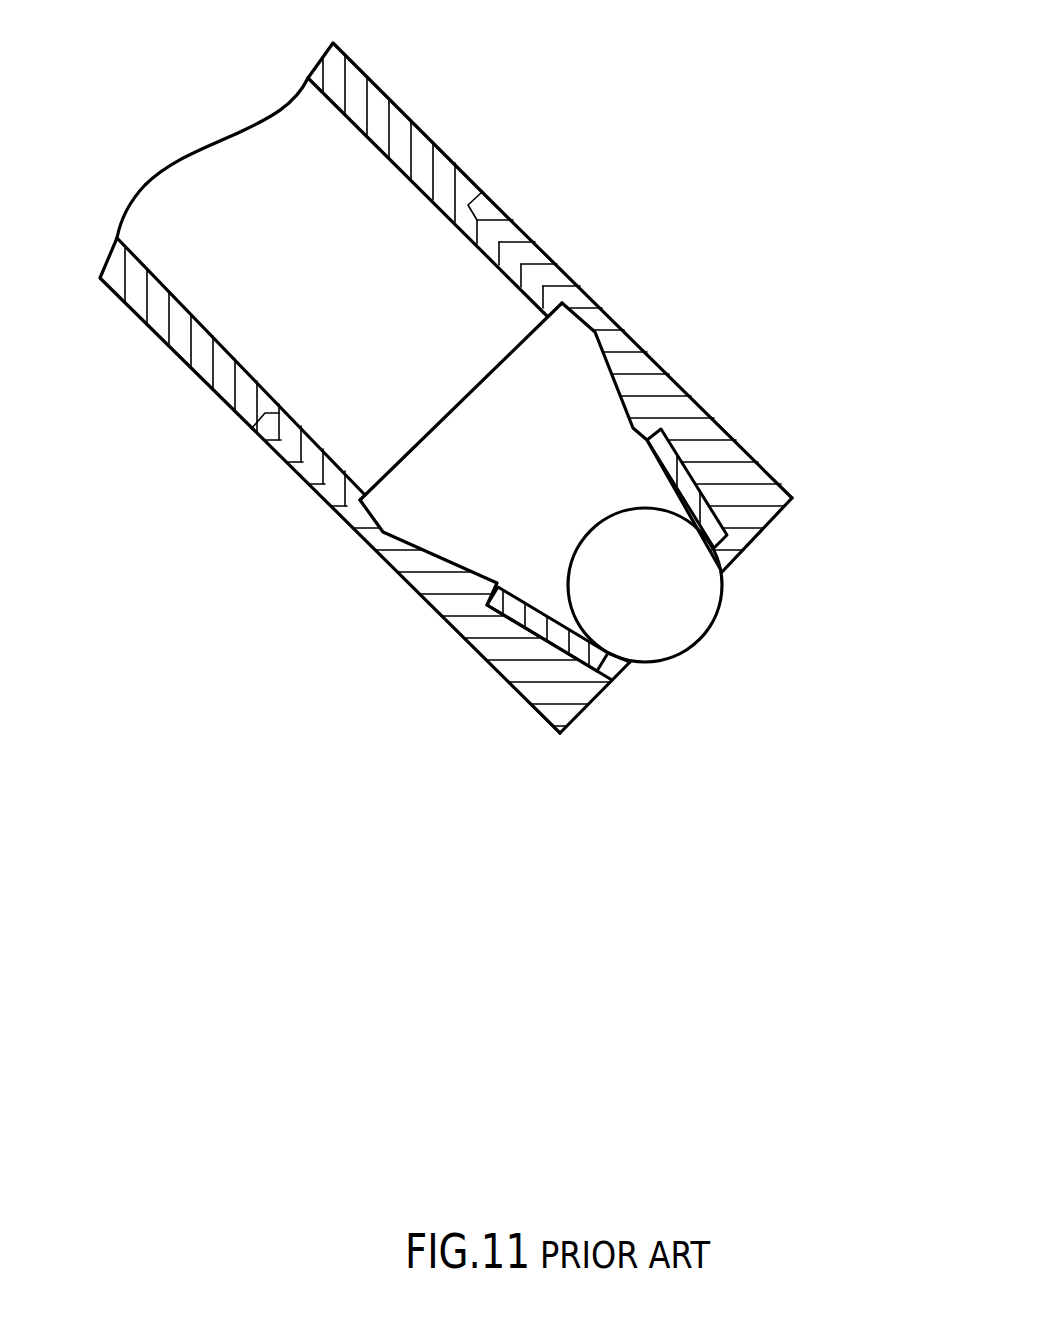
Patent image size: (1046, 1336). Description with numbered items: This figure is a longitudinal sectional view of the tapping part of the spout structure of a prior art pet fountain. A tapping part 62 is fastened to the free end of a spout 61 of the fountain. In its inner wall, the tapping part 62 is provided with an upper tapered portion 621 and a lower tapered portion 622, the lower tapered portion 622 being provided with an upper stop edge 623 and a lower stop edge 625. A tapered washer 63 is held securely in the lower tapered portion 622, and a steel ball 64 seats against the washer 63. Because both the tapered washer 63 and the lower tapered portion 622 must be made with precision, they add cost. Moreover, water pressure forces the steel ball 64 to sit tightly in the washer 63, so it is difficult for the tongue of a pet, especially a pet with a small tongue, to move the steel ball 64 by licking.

The spout 61 is at (398, 105).
The tapping part 62 is at (521, 228).
The upper tapered portion 621 is at (641, 357).
The lower tapered portion 622 is at (523, 628).
The upper stop edge 623 is at (500, 598).
The lower stop edge 625 is at (603, 677).
The tapered washer 63 is at (688, 485).
The steel ball 64 is at (698, 645).